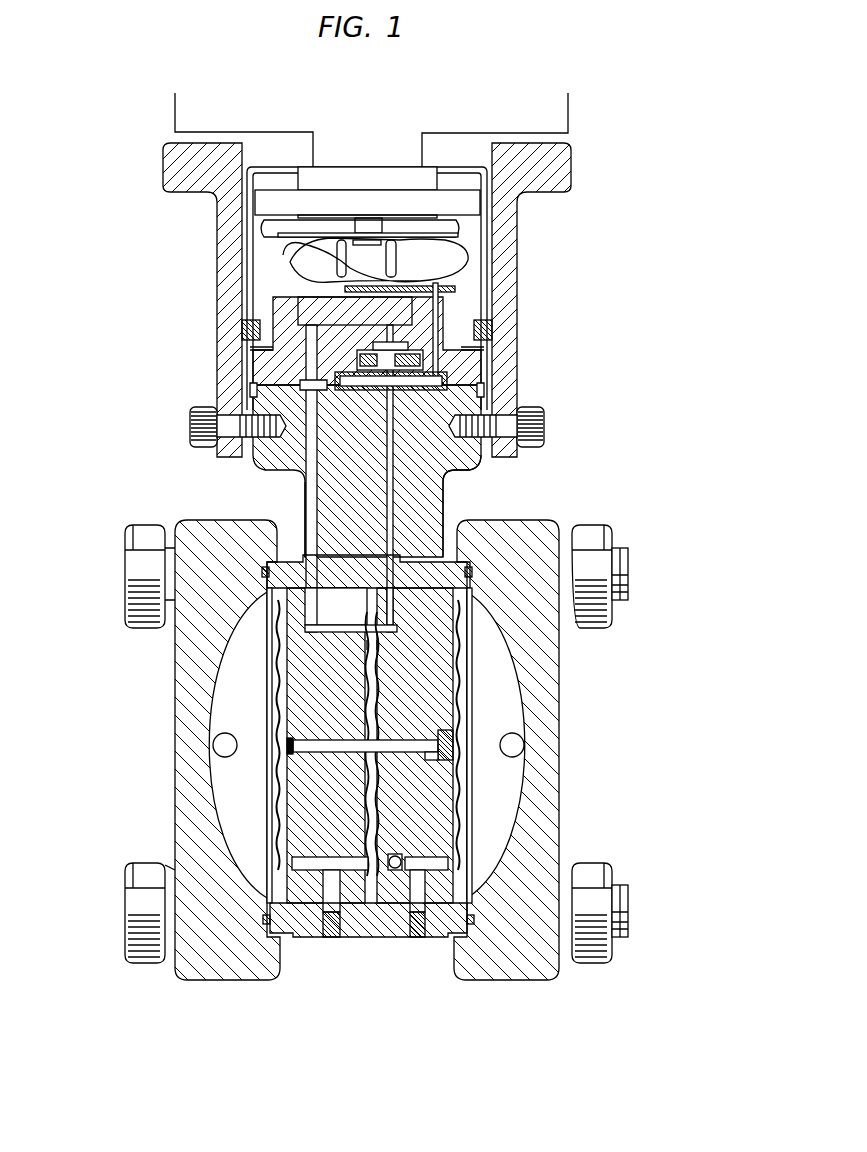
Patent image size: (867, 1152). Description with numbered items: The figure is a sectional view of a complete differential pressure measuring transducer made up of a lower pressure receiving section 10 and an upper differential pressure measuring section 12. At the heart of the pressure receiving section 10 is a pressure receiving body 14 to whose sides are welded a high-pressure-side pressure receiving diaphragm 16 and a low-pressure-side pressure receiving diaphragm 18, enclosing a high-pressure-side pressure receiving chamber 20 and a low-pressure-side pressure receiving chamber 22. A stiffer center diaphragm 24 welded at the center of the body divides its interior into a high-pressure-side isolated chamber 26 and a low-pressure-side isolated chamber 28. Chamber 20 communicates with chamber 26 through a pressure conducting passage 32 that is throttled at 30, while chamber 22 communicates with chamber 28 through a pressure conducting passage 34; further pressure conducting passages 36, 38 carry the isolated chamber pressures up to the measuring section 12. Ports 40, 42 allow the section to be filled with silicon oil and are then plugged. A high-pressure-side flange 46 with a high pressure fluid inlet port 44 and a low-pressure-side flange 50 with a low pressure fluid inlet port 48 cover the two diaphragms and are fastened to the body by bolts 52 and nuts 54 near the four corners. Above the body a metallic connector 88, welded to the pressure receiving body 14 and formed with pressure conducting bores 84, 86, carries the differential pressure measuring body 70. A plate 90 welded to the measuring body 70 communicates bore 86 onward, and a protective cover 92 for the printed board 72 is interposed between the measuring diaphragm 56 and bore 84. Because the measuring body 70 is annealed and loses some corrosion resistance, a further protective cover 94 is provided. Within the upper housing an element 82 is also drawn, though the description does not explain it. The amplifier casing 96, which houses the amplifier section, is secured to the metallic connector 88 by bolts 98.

The pressure receiving section 10 is at (548, 516).
The differential pressure measuring section 12 is at (535, 316).
The pressure receiving body 14 is at (457, 647).
The high-pressure-side pressure receiving diaphragm 16 is at (467, 678).
The low-pressure-side pressure receiving diaphragm 18 is at (290, 800).
The high-pressure-side pressure receiving chamber 20 is at (459, 692).
The low-pressure-side pressure receiving chamber 22 is at (280, 775).
The center diaphragm 24 is at (380, 817).
The high-pressure-side isolated chamber 26 is at (383, 802).
The low-pressure-side isolated chamber 28 is at (367, 820).
The throttle 30 is at (455, 735).
The pressure conducting passage 32 is at (427, 763).
The pressure conducting passage 34 is at (313, 743).
The pressure conducting passage 36 is at (393, 578).
The pressure conducting passage 38 is at (313, 570).
The port 40 is at (403, 907).
The port 42 is at (338, 907).
The high pressure fluid inlet port 44 is at (525, 750).
The high-pressure-side flange 46 is at (555, 797).
The low pressure fluid inlet port 48 is at (213, 740).
The low-pressure-side flange 50 is at (185, 657).
The bolt 52 is at (147, 866).
The nut 54 is at (598, 866).
The measuring diaphragm 56 is at (462, 469).
The differential pressure measuring body 70 is at (267, 370).
The printed board 72 is at (340, 362).
The spring member 82 is at (470, 253).
The pressure conducting bore 84 is at (392, 503).
The pressure conducting bore 86 is at (308, 470).
The metallic connector 88 is at (428, 482).
The plate 90 is at (300, 297).
The protective cover 92 is at (447, 380).
The protective cover 94 is at (255, 308).
The amplifier casing 96 is at (558, 163).
The bolt 98 is at (530, 406).